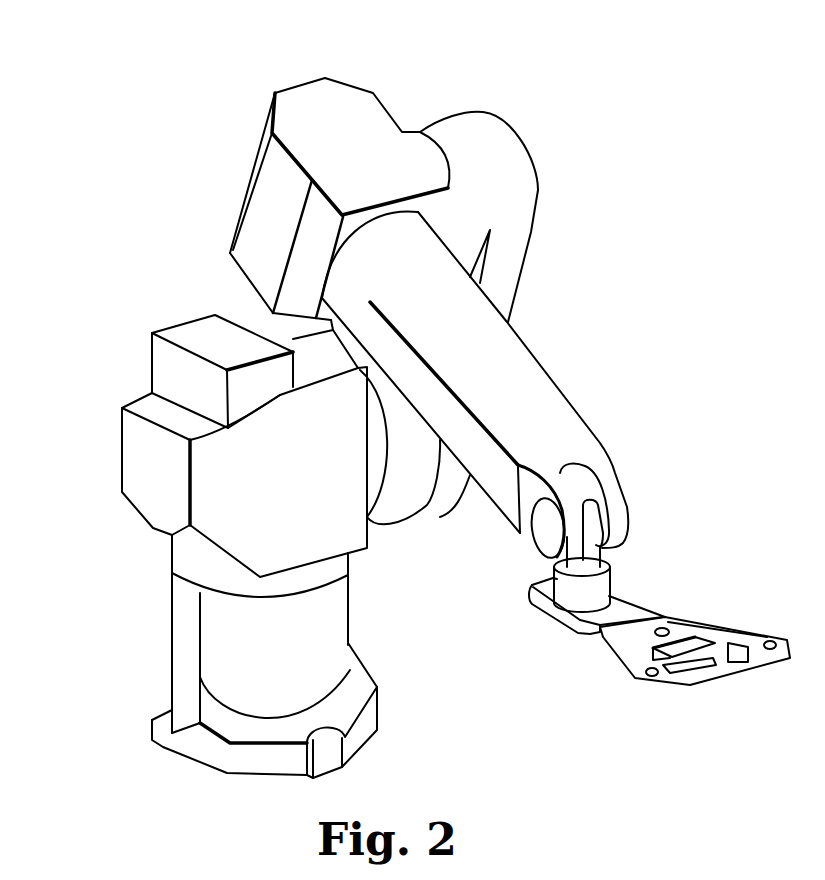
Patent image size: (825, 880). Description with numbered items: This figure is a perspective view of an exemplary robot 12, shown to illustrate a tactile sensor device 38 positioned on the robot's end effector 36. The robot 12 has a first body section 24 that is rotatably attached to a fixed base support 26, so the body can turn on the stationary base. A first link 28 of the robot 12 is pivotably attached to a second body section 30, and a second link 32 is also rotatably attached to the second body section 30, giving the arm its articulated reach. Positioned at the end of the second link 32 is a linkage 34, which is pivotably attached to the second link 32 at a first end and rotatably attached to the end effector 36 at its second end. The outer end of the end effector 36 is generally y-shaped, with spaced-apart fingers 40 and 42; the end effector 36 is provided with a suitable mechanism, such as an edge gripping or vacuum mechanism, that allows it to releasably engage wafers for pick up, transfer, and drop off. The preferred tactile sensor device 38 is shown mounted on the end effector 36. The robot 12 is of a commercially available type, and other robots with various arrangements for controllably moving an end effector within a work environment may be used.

The robot 12 is at (235, 659).
The first body section 24 is at (168, 477).
The fixed base support 26 is at (327, 632).
The first link 28 is at (512, 262).
The second body section 30 is at (335, 105).
The second link 32 is at (530, 371).
The linkage 34 is at (598, 587).
The end effector 36 is at (632, 607).
The tactile sensor device 38 is at (736, 674).
The finger 40 is at (723, 642).
The finger 42 is at (643, 658).